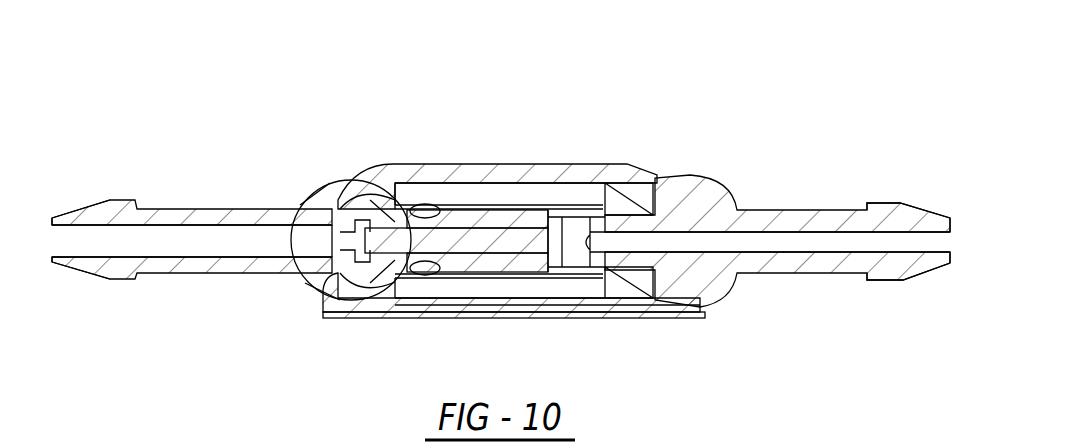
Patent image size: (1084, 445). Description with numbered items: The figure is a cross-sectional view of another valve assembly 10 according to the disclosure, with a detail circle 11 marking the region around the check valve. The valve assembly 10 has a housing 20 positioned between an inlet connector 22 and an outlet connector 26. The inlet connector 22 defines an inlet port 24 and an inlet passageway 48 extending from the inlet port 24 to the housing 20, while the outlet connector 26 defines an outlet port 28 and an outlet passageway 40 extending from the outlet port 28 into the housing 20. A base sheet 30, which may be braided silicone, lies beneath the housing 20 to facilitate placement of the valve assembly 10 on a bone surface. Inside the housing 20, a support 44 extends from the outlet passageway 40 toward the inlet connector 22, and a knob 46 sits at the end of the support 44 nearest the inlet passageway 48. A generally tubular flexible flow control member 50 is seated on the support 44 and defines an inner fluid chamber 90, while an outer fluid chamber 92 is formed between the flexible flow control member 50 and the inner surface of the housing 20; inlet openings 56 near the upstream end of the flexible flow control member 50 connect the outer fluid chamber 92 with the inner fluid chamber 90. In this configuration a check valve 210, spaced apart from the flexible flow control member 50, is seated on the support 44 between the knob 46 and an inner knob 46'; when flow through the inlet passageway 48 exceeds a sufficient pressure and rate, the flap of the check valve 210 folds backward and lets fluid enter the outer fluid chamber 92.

The valve assembly 10 is at (520, 76).
The detail circle 11 is at (323, 183).
The housing 20 is at (590, 165).
The inlet connector 22 is at (158, 209).
The inlet port 24 is at (45, 253).
The outlet connector 26 is at (835, 210).
The outlet port 28 is at (950, 245).
The base sheet 30 is at (647, 318).
The outlet passageway 40 is at (787, 242).
The support 44 is at (503, 247).
The knob 46 is at (316, 272).
The inner knob 46' is at (347, 328).
The inlet passageway 48 is at (203, 240).
The flexible flow control member 50 is at (538, 205).
The inlet openings 56 is at (428, 207).
The inner fluid chamber 90 is at (478, 222).
The outer fluid chamber 92 is at (528, 198).
The check valve 210 is at (350, 205).